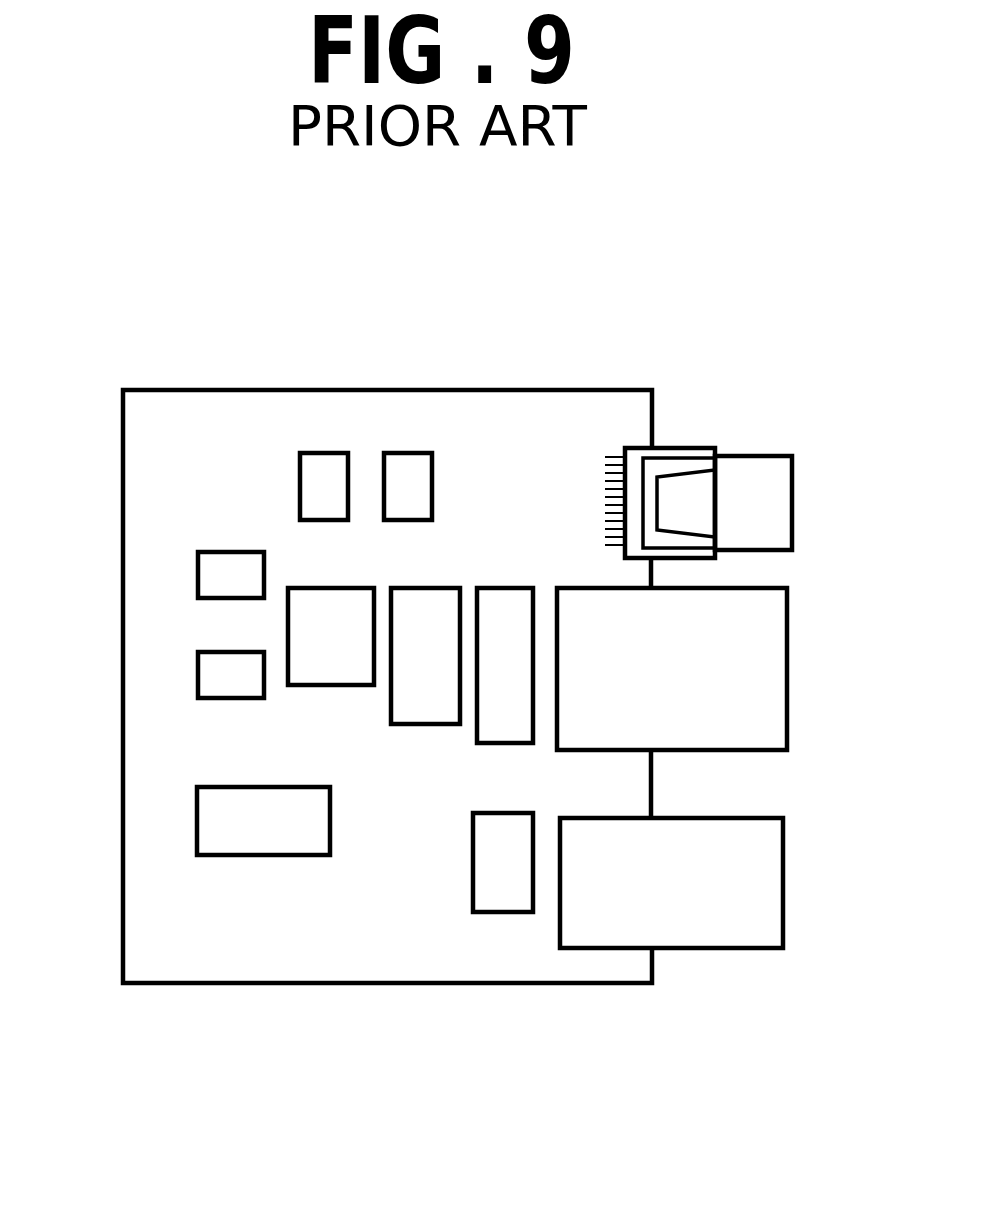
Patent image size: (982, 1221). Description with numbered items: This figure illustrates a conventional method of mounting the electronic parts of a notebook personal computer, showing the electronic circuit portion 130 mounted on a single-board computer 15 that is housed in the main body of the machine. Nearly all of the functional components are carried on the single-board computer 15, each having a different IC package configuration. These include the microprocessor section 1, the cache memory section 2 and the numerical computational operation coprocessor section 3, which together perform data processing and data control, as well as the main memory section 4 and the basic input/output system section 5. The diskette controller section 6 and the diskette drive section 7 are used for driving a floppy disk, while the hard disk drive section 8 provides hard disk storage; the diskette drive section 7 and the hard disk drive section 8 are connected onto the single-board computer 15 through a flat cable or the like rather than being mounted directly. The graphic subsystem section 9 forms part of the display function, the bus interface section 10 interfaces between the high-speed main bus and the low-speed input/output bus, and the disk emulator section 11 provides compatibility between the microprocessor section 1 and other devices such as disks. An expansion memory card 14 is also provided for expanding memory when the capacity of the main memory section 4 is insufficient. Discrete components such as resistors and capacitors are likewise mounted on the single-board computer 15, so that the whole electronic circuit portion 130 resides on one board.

The microprocessor section 1 is at (303, 685).
The cache memory section 2 is at (198, 582).
The numerical computational operation coprocessor section 3 is at (318, 453).
The main memory section 4 is at (198, 680).
The basic input/output system (BIOS) section 5 is at (412, 453).
The diskette controller section 6 is at (503, 598).
The diskette drive section 7 is at (787, 672).
The hard disk drive section 8 is at (783, 903).
The graphic subsystem section 9 is at (197, 845).
The bus interface section 10 is at (410, 724).
The disk emulator section 11 is at (495, 912).
The expansion memory card 14 is at (750, 456).
The single-board computer 15 is at (371, 390).
The electronic circuit portion 130 is at (752, 1142).